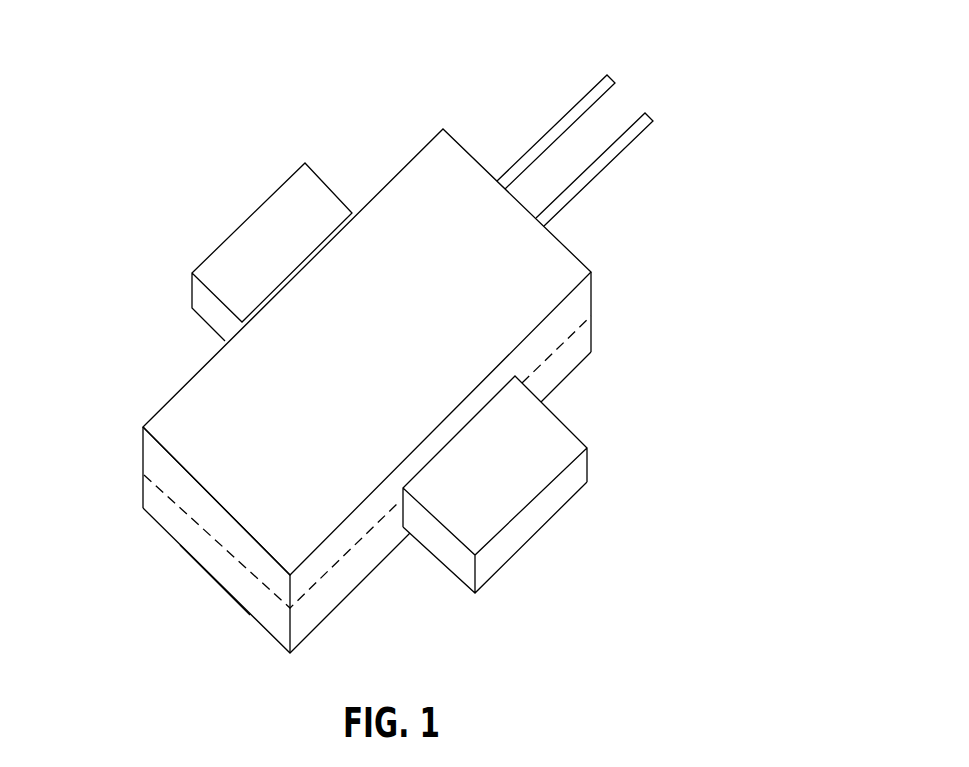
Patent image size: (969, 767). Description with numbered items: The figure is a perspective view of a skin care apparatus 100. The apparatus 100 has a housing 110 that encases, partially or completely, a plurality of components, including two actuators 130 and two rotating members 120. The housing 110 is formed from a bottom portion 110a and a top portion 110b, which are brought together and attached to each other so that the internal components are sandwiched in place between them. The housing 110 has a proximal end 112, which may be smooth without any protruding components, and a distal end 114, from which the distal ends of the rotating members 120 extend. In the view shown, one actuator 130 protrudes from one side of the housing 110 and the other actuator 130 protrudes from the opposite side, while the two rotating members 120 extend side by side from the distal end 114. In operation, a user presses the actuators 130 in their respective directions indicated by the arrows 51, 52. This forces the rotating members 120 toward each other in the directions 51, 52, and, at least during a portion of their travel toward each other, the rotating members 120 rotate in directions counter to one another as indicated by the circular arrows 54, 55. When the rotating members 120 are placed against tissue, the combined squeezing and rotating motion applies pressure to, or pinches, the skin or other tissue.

The skin care apparatus 100 is at (358, 65).
The housing 110 is at (225, 397).
The bottom portion 110a is at (168, 510).
The top portion 110b is at (165, 468).
The proximal end 112 is at (225, 572).
The distal end 114 is at (592, 271).
The rotating members 120 is at (557, 125).
The actuators 130 is at (275, 192).
The direction 51 is at (595, 201).
The direction 52 is at (205, 196).
The circular arrow 54 is at (652, 87).
The circular arrow 55 is at (627, 88).